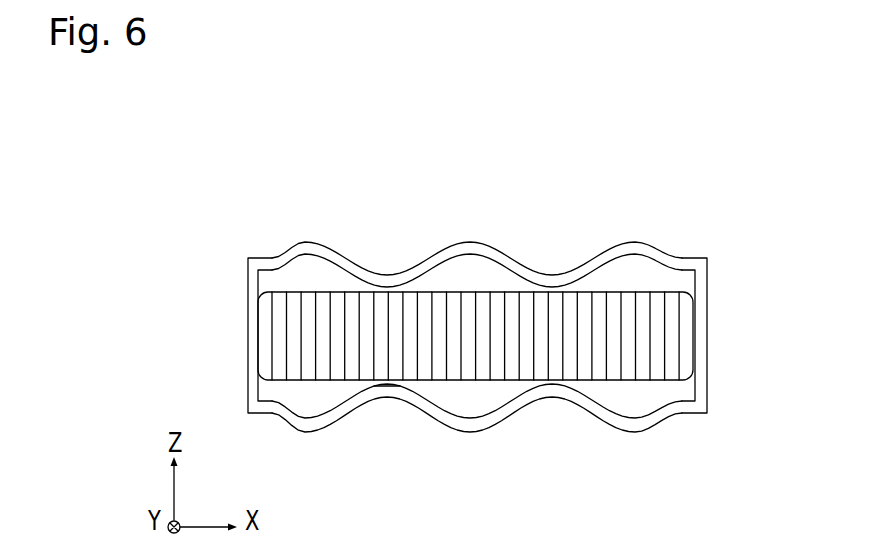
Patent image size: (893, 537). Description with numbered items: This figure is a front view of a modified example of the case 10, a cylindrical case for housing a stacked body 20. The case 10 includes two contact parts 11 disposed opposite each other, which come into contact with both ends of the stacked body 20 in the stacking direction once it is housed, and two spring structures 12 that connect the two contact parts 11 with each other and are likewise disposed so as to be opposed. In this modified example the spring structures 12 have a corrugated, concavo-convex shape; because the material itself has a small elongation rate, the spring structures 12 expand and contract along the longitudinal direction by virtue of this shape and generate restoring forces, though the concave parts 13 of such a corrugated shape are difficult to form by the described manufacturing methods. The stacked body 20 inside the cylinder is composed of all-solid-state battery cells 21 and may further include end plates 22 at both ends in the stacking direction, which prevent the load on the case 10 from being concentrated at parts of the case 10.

The case 10 is at (245, 296).
The contact part 11 is at (721, 294).
The spring structure 12 is at (705, 213).
The concave part 13 is at (463, 433).
The stacked body 20 is at (538, 383).
The all-solid-state battery cell 21 is at (598, 362).
The end plate 22 is at (690, 376).